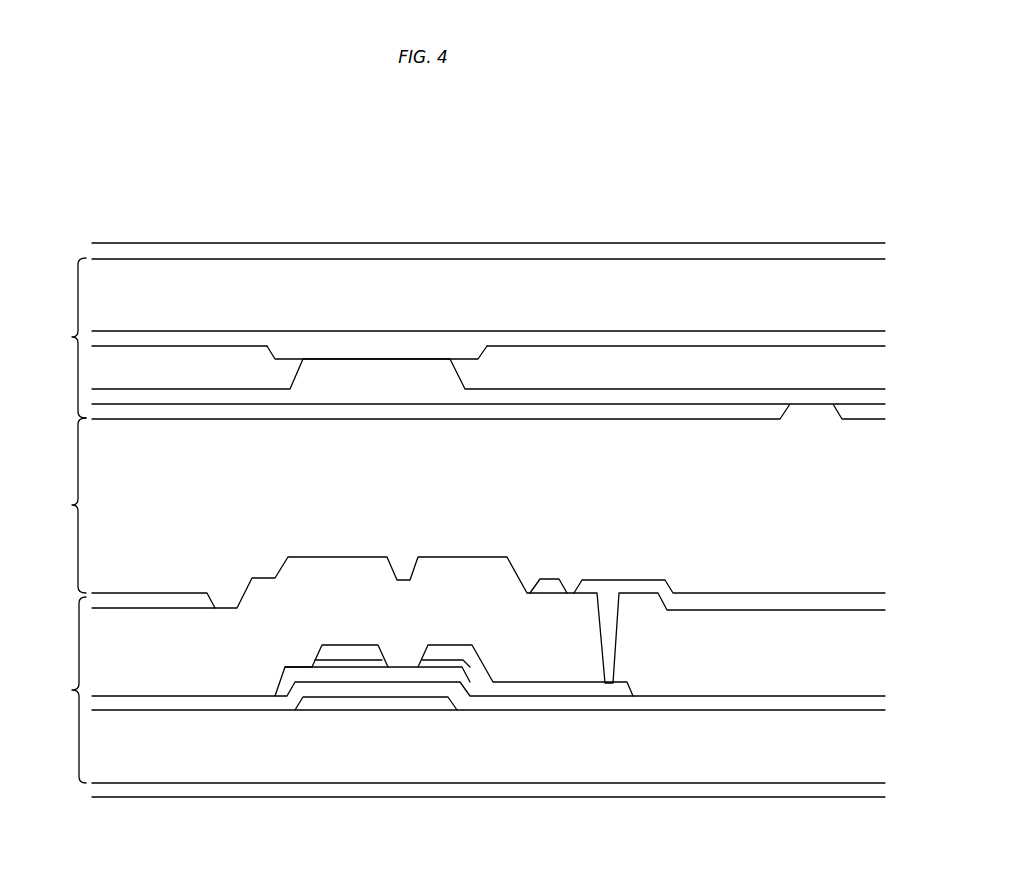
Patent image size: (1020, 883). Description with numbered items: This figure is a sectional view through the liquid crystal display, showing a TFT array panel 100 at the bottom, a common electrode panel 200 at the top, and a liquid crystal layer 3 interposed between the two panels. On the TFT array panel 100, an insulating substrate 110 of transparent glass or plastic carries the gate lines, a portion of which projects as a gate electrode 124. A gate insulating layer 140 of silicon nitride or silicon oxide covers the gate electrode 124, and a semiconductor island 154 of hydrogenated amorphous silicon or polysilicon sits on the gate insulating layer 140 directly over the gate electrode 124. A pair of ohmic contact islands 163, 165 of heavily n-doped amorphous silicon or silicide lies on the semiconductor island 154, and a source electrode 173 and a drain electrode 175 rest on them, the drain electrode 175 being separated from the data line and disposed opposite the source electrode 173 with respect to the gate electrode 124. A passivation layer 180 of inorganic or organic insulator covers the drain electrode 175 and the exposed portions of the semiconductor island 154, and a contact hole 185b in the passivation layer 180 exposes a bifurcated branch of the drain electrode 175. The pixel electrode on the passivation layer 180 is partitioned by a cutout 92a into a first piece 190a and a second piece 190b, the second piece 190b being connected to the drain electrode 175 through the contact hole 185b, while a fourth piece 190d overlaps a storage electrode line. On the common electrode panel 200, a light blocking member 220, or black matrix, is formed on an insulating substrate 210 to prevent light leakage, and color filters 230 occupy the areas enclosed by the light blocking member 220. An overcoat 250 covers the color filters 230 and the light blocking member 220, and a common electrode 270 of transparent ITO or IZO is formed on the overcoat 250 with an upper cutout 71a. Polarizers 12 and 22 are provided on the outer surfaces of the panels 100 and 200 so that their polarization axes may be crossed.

The liquid crystal layer 3 is at (67, 505).
The polarizer 12 is at (105, 790).
The polarizer 22 is at (105, 248).
The upper cutout 71a is at (813, 419).
The cutout 92a is at (568, 581).
The TFT array panel 100 is at (61, 690).
The insulating substrate 110 is at (188, 768).
The gate electrode 124 is at (373, 693).
The gate insulating layer 140 is at (518, 693).
The semiconductor island 154 is at (395, 673).
The ohmic contact island 163 is at (347, 662).
The ohmic contact island 165 is at (437, 662).
The source electrode 173 is at (328, 655).
The drain electrode 175 is at (582, 687).
The passivation layer 180 is at (337, 578).
The contact hole 185b is at (603, 623).
The first piece of the pixel electrode 190a is at (548, 585).
The second piece of the pixel electrode 190b is at (818, 602).
The fourth piece of the pixel electrode 190d is at (154, 602).
The common electrode panel 200 is at (61, 338).
The insulating substrate 210 is at (694, 272).
The light blocking member 220 is at (396, 352).
The color filter 230 is at (192, 374).
The overcoat 250 is at (344, 385).
The common electrode 270 is at (701, 412).